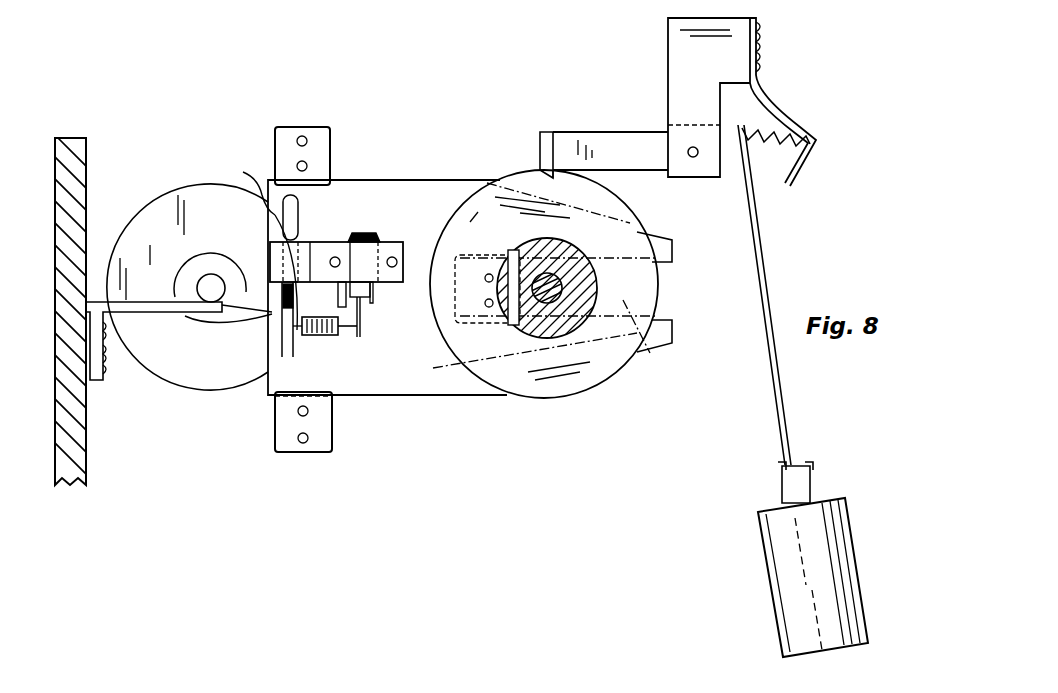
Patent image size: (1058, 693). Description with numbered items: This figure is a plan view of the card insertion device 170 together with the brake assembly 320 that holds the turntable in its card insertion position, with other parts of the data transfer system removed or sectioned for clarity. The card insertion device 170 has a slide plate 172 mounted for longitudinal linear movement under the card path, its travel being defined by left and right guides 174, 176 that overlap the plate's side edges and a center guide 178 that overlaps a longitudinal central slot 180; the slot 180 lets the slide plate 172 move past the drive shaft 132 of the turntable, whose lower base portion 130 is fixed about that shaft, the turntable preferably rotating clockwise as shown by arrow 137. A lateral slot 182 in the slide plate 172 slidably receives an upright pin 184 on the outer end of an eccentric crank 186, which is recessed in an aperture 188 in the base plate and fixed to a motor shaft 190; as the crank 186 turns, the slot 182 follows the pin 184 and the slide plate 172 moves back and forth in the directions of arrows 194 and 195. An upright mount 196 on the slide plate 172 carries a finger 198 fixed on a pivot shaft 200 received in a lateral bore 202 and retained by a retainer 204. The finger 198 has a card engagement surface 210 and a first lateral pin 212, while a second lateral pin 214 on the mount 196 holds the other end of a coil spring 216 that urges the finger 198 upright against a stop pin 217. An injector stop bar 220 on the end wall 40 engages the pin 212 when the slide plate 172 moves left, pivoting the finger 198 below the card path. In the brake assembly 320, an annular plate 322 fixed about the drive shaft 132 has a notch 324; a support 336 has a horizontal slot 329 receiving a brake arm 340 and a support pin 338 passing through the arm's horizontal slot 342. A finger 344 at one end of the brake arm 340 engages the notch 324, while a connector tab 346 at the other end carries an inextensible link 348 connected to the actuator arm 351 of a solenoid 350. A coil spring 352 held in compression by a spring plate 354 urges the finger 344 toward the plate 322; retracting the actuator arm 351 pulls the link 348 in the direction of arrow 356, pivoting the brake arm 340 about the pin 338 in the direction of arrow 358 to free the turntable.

The end wall 40 is at (86, 425).
The lower base portion 130 is at (520, 331).
The drive shaft 132 is at (570, 322).
The arrow 137 is at (499, 83).
The card insertion device 170 is at (388, 407).
The slide plate 172 is at (403, 179).
The left guide 174 is at (332, 150).
The right guide 176 is at (333, 421).
The center guide 178 is at (470, 345).
The longitudinal central slot 180 is at (640, 348).
The lateral slot 182 is at (259, 234).
The upright pin 184 is at (298, 232).
The eccentric crank 186 is at (233, 268).
The aperture 188 is at (150, 203).
The shaft 190 is at (200, 276).
The arrow 194 is at (634, 440).
The arrow 195 is at (591, 493).
The upright mount 196 is at (322, 240).
The finger 198 is at (372, 302).
The pivot shaft 200 is at (360, 240).
The lateral bore 202 is at (437, 242).
The retainer 204 is at (475, 222).
The card engagement surface 210 is at (374, 290).
The first lateral pin 212 is at (356, 338).
The second lateral pin 214 is at (272, 316).
The coil spring 216 is at (292, 338).
The stop pin 217 is at (283, 297).
The injector stop bar 220 is at (155, 312).
The brake assembly 320 is at (805, 54).
The annular plate 322 is at (652, 290).
The notch 324 is at (536, 167).
The horizontal slot 329 is at (700, 150).
The support 336 is at (668, 38).
The support pin 338 is at (692, 158).
The brake arm 340 is at (603, 171).
The horizontal slot 342 is at (688, 126).
The finger 344 is at (542, 131).
The connector tab 346 is at (768, 116).
The inextensible link 348 is at (758, 248).
The solenoid 350 is at (828, 590).
The actuator arm 351 is at (812, 488).
The coil spring 352 is at (797, 123).
The spring plate 354 is at (815, 153).
The arrow 356 is at (823, 378).
The arrow 358 is at (573, 93).